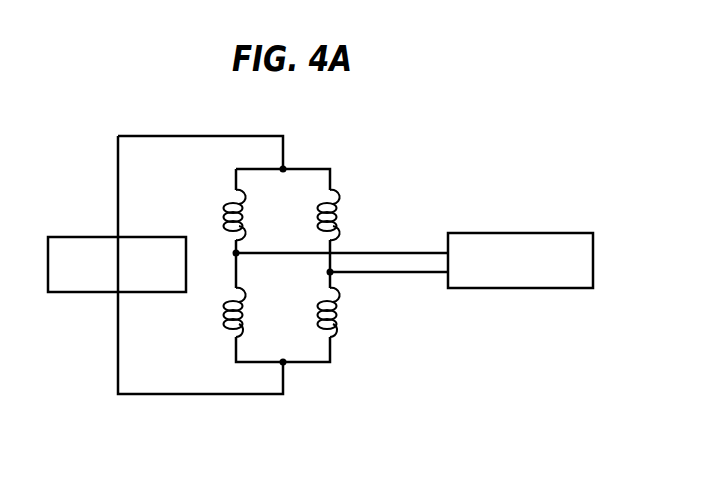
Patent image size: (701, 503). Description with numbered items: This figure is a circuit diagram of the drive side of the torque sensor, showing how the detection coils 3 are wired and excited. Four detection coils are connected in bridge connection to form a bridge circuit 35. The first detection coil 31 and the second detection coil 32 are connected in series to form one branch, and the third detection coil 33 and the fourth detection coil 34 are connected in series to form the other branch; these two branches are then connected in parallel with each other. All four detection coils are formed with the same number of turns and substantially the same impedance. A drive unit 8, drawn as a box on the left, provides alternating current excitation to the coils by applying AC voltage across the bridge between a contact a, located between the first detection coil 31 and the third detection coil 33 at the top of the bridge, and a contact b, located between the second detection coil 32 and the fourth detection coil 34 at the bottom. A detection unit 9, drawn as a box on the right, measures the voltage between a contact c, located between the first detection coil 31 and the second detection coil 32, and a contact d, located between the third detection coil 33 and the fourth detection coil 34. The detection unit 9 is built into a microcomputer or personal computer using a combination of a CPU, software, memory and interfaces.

The detection coils 3 is at (222, 197).
The drive unit 8 is at (73, 236).
The detection unit 9 is at (541, 232).
The first detection coil 31 is at (247, 206).
The second detection coil 32 is at (247, 303).
The third detection coil 33 is at (340, 206).
The fourth detection coil 34 is at (340, 303).
The bridge circuit 35 is at (324, 265).
The contact a is at (285, 167).
The contact b is at (286, 365).
The contact c is at (233, 253).
The contact d is at (327, 272).